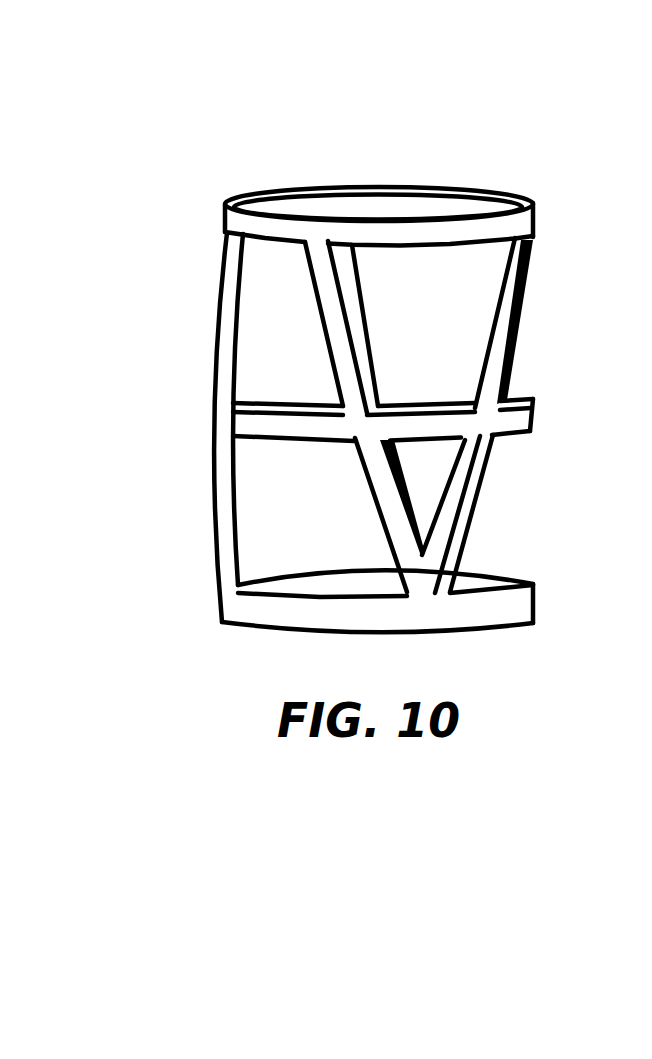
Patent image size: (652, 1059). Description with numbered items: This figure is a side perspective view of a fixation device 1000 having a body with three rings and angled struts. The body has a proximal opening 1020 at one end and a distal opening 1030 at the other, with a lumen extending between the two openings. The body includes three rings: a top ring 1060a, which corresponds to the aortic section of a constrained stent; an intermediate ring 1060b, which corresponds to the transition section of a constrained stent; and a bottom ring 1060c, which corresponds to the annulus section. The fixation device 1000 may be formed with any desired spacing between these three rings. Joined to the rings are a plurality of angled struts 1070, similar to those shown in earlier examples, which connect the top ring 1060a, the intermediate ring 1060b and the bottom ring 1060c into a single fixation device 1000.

The fixation device 1000 is at (180, 482).
The proximal opening 1020 is at (445, 650).
The distal opening 1030 is at (412, 148).
The top ring 1060a is at (246, 227).
The intermediate ring 1060b is at (234, 424).
The bottom ring 1060c is at (243, 612).
The angled struts 1070 is at (497, 332).